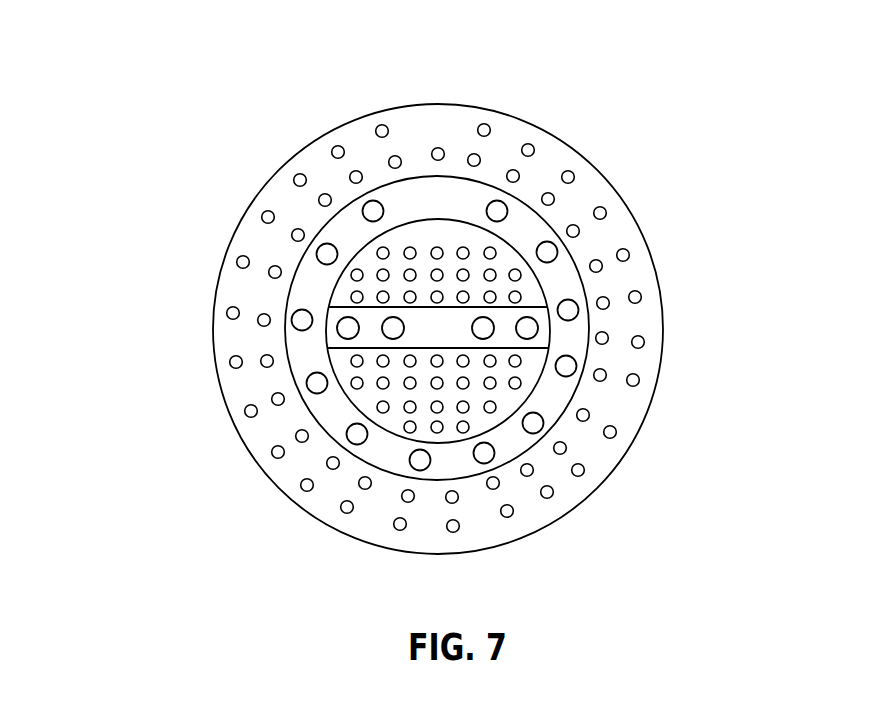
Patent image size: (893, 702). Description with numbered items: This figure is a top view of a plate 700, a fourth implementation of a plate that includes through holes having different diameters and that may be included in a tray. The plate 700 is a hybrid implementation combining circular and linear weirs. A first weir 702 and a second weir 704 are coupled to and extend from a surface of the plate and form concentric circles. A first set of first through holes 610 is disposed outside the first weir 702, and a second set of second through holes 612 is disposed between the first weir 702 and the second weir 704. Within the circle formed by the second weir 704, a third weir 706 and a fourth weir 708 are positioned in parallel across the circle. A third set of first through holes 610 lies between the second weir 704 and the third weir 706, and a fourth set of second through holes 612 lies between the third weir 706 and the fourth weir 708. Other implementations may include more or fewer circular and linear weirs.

The plate 700 is at (82, 77).
The first through holes 610 is at (456, 138).
The second through holes 612 is at (456, 208).
The first weir 702 is at (517, 193).
The second weir 704 is at (517, 240).
The third weir 706 is at (547, 307).
The fourth weir 708 is at (549, 348).